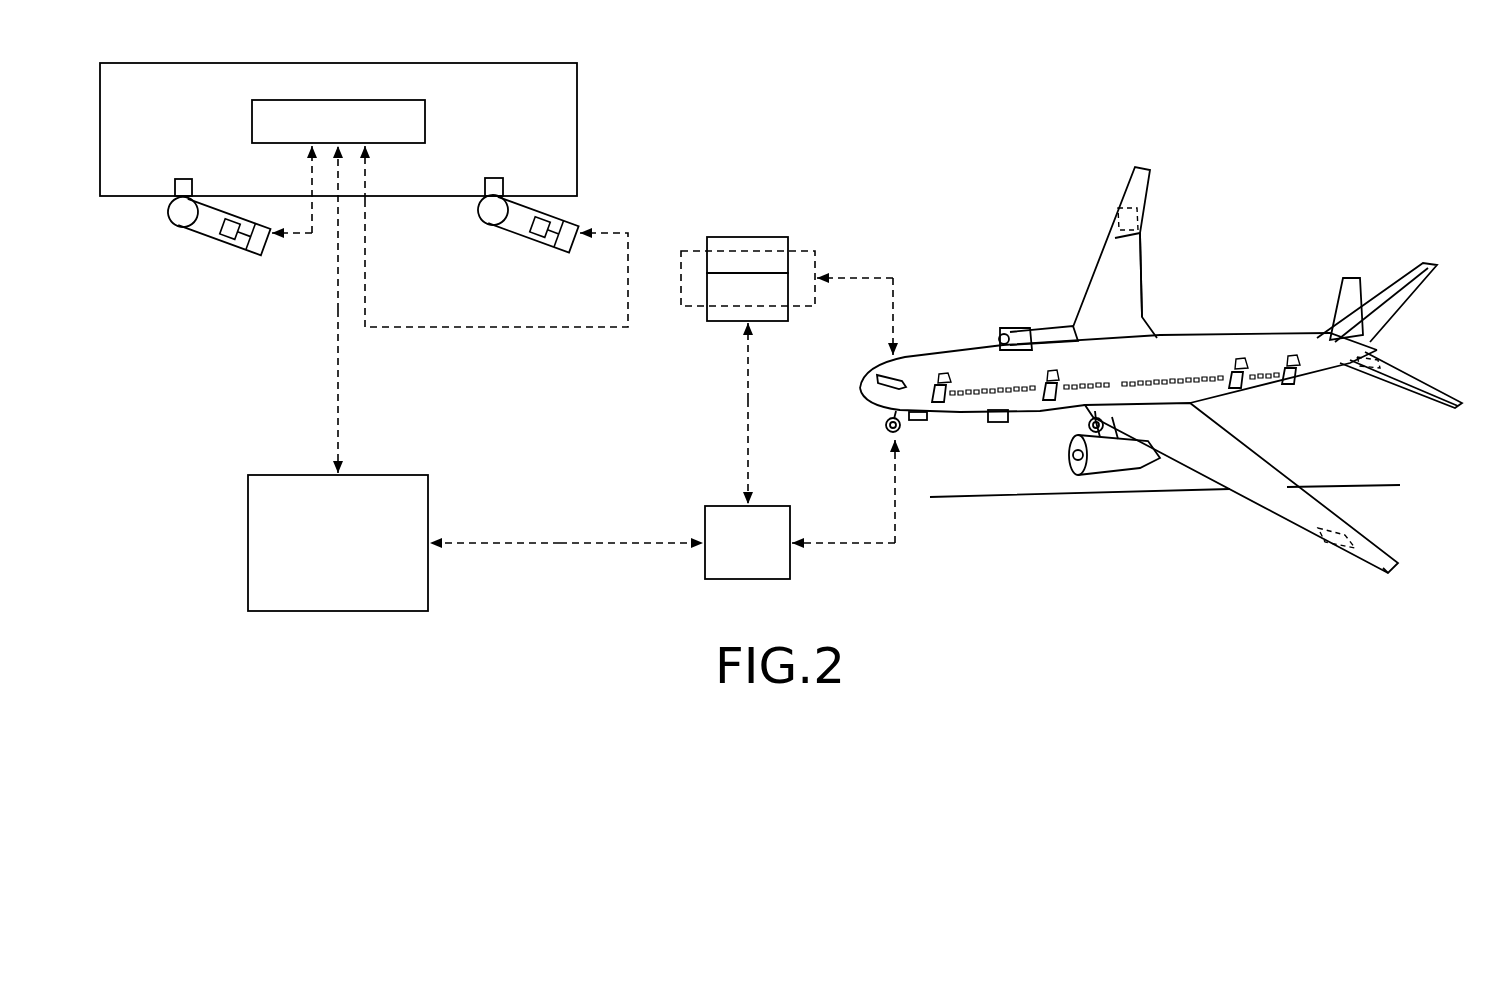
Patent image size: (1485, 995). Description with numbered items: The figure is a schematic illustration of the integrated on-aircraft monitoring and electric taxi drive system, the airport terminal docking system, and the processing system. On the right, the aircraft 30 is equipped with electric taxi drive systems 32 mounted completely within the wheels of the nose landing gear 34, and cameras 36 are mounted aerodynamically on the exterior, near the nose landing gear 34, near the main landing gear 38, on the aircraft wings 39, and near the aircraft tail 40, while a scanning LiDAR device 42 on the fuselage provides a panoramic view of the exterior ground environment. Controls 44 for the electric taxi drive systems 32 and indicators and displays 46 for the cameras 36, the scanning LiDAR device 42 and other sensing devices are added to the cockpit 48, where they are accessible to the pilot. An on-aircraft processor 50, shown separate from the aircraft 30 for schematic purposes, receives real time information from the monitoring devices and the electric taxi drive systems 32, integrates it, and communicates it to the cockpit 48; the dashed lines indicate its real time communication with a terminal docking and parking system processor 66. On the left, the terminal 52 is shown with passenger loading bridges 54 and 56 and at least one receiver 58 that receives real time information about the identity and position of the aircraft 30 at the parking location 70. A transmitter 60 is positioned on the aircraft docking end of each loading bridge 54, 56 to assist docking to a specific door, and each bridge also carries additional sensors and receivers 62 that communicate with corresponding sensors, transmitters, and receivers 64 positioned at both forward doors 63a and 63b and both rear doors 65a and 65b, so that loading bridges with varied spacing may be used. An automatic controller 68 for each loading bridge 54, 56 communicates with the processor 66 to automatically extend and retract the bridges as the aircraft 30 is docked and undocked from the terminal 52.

The aircraft 30 is at (1121, 370).
The electric taxi drive systems 32 is at (901, 432).
The nose landing gear 34 is at (884, 427).
The cameras 36 is at (1118, 216).
The main landing gear 38 is at (1074, 445).
The aircraft wings 39 is at (1130, 262).
The aircraft tail 40 is at (1393, 345).
The scanning LiDAR device 42 is at (1000, 421).
The controls 44 is at (758, 242).
The indicators and displays 46 is at (733, 310).
The cockpit 48 is at (872, 372).
The on-aircraft processor 50 is at (716, 512).
The terminal 52 is at (562, 74).
The passenger loading bridge 54 is at (192, 232).
The passenger loading bridge 56 is at (506, 232).
The receiver 58 is at (340, 116).
The transmitter 60 is at (256, 252).
The sensors and receivers 62 is at (231, 238).
The forward door 63a is at (936, 384).
The forward door 63b is at (1058, 382).
The sensors, transmitters, and receivers 64 is at (945, 373).
The rear door 65a is at (1242, 388).
The rear door 65b is at (1298, 385).
The terminal docking and parking system processor 66 is at (262, 536).
The automatic controller 68 is at (181, 180).
The parking location 70 is at (320, 290).